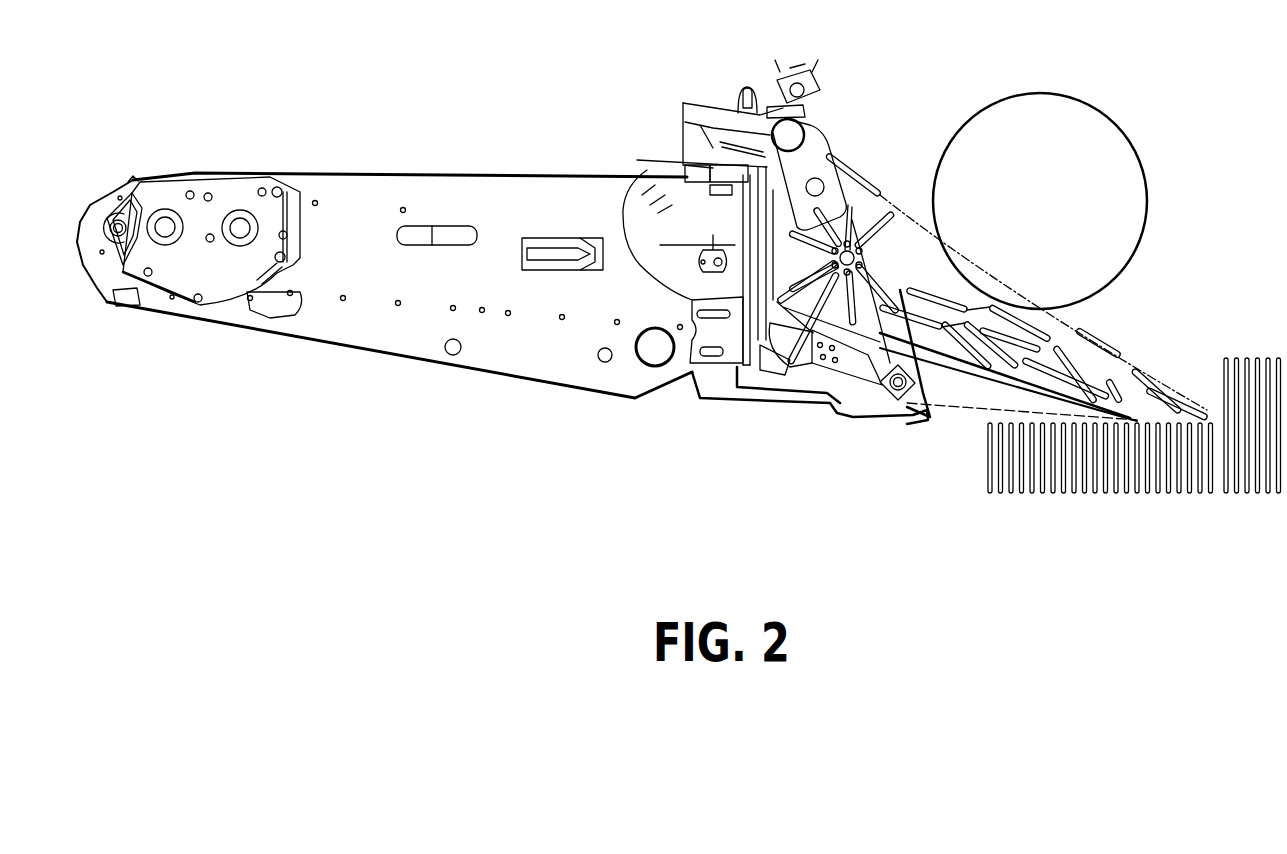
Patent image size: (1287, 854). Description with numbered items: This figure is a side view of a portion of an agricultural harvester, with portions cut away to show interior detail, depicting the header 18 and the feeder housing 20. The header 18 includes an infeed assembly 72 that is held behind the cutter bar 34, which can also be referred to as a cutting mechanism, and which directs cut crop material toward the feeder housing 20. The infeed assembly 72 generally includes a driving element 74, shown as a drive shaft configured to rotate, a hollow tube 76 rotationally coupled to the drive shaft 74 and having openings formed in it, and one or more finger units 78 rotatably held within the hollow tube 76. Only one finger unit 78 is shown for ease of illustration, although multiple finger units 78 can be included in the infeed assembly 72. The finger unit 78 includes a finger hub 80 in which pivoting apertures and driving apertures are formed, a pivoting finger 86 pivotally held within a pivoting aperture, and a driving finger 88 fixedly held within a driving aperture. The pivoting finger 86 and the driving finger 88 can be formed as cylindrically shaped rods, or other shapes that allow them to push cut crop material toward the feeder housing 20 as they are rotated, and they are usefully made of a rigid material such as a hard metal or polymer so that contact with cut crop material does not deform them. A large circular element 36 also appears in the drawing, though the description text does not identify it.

The header 18 is at (862, 80).
The feeder housing 20 is at (468, 168).
The cutter bar 34 is at (1050, 397).
The drum / roller 36 is at (1082, 93).
The infeed assembly 72 is at (860, 225).
The driving element 74 is at (767, 260).
The hollow tube 76 is at (890, 290).
The finger unit 78 is at (862, 300).
The finger hub 80 is at (865, 250).
The pivoting finger 86 is at (835, 273).
The driving finger 88 is at (880, 300).